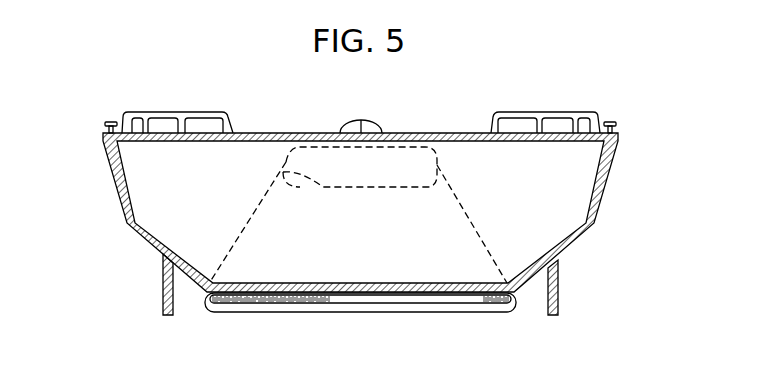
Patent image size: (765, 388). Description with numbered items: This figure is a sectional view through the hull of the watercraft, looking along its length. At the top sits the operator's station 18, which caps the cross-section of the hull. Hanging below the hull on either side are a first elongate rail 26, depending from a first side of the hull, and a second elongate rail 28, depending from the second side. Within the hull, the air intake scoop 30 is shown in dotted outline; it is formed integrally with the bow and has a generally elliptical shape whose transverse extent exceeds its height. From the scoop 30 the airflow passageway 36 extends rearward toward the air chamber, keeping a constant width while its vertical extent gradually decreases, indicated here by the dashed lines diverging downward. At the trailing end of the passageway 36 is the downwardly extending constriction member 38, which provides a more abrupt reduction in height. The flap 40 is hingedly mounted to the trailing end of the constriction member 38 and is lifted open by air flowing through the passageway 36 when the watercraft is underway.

The operator's station 18 is at (330, 115).
The first elongate rail 26 is at (163, 287).
The second elongate rail 28 is at (558, 288).
The air intake scoop 30 is at (283, 173).
The airflow passageway 36 is at (257, 240).
The constriction member 38 is at (372, 297).
The flap 40 is at (445, 305).